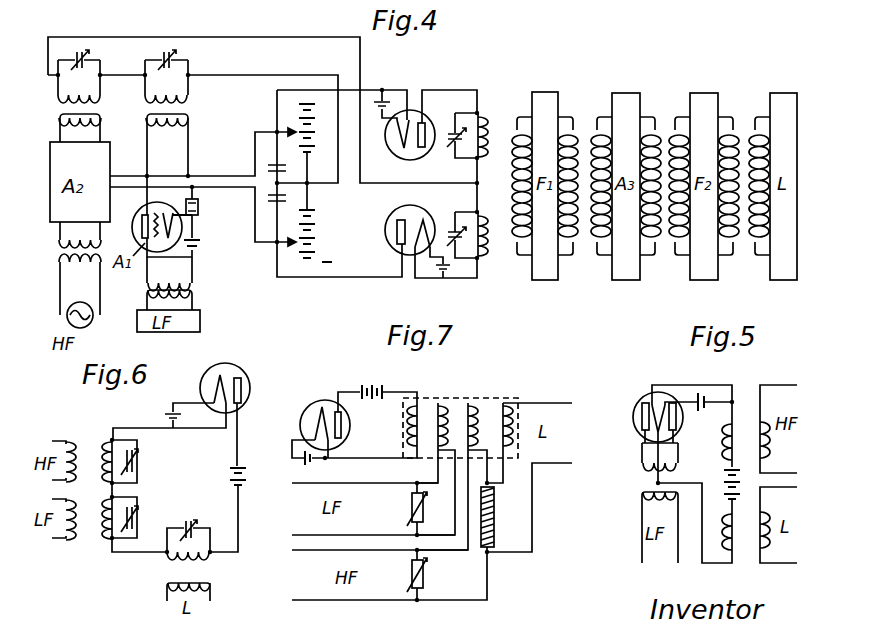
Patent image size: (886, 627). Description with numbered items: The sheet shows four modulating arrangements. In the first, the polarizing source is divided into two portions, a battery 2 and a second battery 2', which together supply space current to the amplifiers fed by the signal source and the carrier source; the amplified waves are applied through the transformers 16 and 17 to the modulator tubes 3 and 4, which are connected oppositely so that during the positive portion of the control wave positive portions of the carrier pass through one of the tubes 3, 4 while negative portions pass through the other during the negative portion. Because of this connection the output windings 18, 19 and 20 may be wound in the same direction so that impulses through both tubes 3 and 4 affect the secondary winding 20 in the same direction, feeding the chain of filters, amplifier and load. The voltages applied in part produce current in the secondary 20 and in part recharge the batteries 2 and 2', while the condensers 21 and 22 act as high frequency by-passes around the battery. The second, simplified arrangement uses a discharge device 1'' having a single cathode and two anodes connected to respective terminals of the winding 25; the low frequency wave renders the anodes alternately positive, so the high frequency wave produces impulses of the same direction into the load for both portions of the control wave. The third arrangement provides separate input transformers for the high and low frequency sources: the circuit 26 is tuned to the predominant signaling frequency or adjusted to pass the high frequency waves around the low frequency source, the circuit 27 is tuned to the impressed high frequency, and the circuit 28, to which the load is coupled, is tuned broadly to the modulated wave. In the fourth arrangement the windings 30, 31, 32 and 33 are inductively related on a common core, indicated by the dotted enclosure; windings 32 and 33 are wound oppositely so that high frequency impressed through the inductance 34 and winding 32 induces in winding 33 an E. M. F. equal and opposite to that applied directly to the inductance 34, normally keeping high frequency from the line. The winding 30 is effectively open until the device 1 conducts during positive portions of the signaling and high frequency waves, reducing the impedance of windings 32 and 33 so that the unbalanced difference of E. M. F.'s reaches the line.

In FIG. 6, the discharge device 1 is at (181, 406).
In FIG. 7, the discharge device 1 is at (354, 421).
In FIG. 5, the discharge device 1'' is at (683, 464).
In FIG. 4, the polarizing battery 2 is at (314, 149).
In FIG. 6, the polarizing battery 2 is at (237, 507).
In FIG. 7, the polarizing battery 2 is at (389, 383).
In FIG. 5, the polarizing battery 2 is at (719, 486).
In FIG. 4, the polarizing source portion 2' is at (320, 236).
In FIG. 4, the modulator tube 3 is at (410, 159).
In FIG. 4, the modulator tube 4 is at (393, 214).
In FIG. 4, the transformer 16 is at (181, 109).
In FIG. 4, the transformer 17 is at (94, 108).
In FIG. 4, the output winding 18 is at (488, 118).
In FIG. 4, the output winding 19 is at (486, 256).
In FIG. 4, the secondary winding 20 is at (511, 190).
In FIG. 4, the condenser 21 is at (268, 166).
In FIG. 4, the condenser 22 is at (268, 199).
In FIG. 5, the winding 25 is at (641, 471).
In FIG. 6, the tuned circuit 26 is at (131, 506).
In FIG. 6, the tuned circuit 27 is at (137, 450).
In FIG. 6, the tuned circuit 28 is at (200, 526).
In FIG. 7, the winding 30 is at (421, 405).
In FIG. 7, the winding 31 is at (444, 405).
In FIG. 7, the winding 32 is at (474, 405).
In FIG. 7, the winding 33 is at (507, 405).
In FIG. 7, the inductance 34 is at (495, 523).